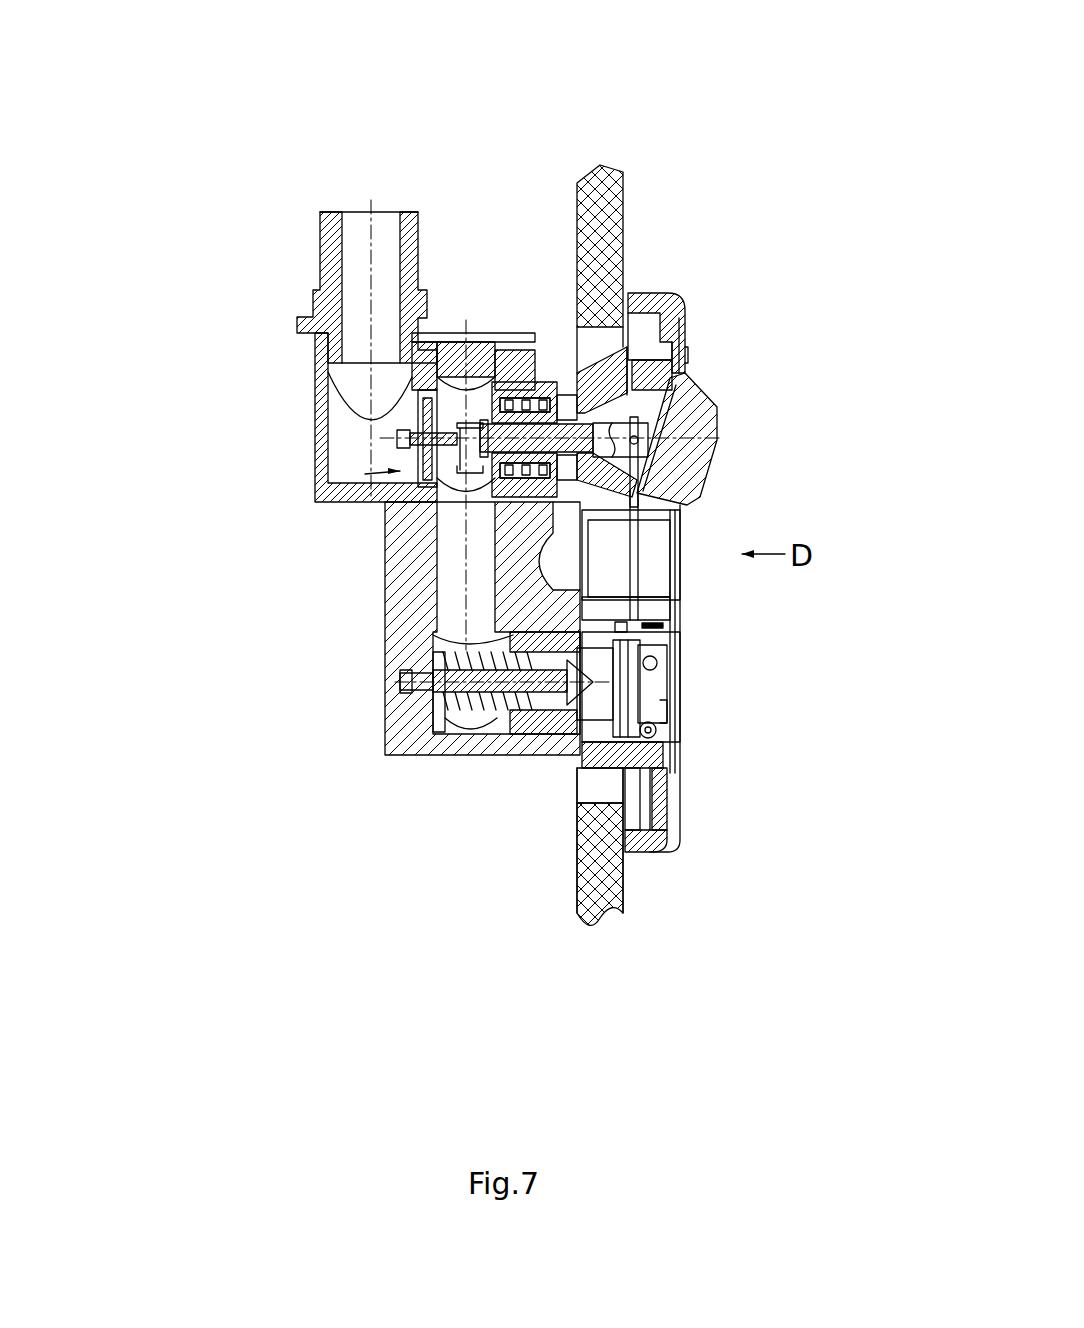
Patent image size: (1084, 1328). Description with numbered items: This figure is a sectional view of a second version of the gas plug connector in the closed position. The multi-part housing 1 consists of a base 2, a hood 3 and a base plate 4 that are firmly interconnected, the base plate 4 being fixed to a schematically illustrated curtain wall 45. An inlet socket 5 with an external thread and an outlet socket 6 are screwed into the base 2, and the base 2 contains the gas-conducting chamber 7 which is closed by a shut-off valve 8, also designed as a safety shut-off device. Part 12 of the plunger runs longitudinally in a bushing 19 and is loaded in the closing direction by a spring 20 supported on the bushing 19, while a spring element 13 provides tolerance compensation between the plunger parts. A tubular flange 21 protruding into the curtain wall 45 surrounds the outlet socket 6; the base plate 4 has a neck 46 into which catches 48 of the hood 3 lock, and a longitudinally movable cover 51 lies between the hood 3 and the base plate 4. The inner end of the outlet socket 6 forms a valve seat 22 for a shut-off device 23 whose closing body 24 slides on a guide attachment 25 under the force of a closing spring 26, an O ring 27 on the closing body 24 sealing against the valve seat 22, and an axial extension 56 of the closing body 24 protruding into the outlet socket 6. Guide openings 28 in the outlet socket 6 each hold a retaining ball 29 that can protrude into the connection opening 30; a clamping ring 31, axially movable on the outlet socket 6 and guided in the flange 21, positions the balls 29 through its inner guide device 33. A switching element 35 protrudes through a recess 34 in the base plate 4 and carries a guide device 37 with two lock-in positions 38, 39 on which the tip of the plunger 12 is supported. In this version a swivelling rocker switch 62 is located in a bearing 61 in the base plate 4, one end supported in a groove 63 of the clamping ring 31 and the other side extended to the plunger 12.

The housing 1 is at (297, 406).
The base 2 is at (320, 452).
The hood 3 is at (645, 300).
The base plate 4 is at (665, 317).
The inlet socket 5 is at (328, 268).
The outlet socket 6 is at (583, 738).
The gas-conducting chamber 7 is at (455, 552).
The shut-off valve 8 is at (395, 470).
The plunger part 12 is at (500, 438).
The spring element 13 is at (455, 480).
The bushing 19 is at (503, 395).
The spring 20 is at (542, 405).
The tubular flange 21 is at (684, 800).
The valve seat 22 is at (543, 707).
The shut-off device 23 is at (485, 735).
The closing body 24 is at (523, 700).
The guide attachment 25 is at (467, 708).
The closing spring 26 is at (480, 722).
The O ring 27 is at (443, 690).
The guide openings 28 is at (650, 690).
The retaining ball 29 is at (648, 740).
The connection opening 30 is at (650, 665).
The clamping ring 31 is at (660, 626).
The inner guide device 33 is at (658, 640).
The recess 34 is at (643, 375).
The switching element 35 is at (677, 408).
The guide device 37 is at (593, 397).
The lock-in position 38 is at (585, 408).
The lock-in position 39 is at (590, 400).
The curtain wall 45 is at (600, 897).
The neck 46 is at (623, 837).
The catches 48 is at (630, 310).
The cover 51 is at (665, 722).
The axial extension 56 is at (590, 682).
The bearing 61 is at (633, 573).
The rocker switch 62 is at (635, 607).
The groove 63 is at (648, 752).